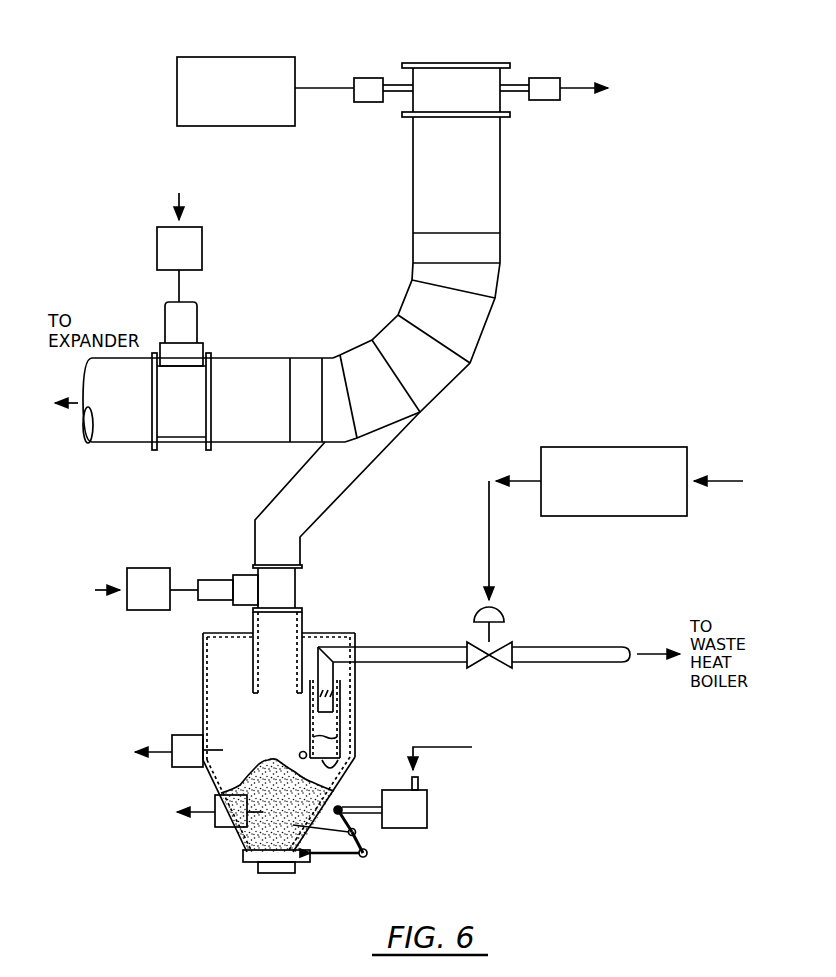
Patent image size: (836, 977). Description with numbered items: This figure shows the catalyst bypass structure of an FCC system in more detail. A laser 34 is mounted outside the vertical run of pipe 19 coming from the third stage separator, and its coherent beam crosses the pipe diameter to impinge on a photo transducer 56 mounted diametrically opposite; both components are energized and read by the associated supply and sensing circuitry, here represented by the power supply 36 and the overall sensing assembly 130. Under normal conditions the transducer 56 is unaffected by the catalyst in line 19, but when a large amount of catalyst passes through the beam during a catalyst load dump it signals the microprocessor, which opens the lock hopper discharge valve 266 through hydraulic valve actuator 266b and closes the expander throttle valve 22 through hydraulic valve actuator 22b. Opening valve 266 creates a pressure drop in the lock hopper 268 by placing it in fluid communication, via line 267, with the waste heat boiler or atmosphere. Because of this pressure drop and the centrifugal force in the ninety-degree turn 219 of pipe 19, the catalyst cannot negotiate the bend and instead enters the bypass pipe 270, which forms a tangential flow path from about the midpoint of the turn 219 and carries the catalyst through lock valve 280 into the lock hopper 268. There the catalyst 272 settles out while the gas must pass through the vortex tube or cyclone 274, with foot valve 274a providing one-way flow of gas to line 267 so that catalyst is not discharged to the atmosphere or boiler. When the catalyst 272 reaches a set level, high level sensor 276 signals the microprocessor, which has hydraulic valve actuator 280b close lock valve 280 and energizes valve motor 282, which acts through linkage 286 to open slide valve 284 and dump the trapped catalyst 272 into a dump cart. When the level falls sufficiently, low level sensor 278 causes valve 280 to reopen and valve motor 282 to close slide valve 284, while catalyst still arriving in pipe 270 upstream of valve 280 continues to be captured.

The power supply 36 is at (243, 53).
The laser 34 is at (370, 73).
The photo transducer 56 is at (547, 75).
The pipe or line 19 is at (503, 173).
The electrostatic precipitator assembly 130 is at (368, 142).
The 90° turn 219 is at (487, 333).
The hydraulic valve actuator 22b is at (205, 250).
The valve 22 is at (198, 318).
The bypass pipe 270 is at (342, 498).
The hydraulic valve actuator 280b is at (148, 568).
The lock valve 280 is at (222, 578).
The catalyst 272 is at (267, 828).
The lock hopper 268 is at (203, 692).
The slide valve 284 is at (287, 873).
The high level sensor 276 is at (172, 740).
The low level sensor 278 is at (215, 800).
The vortex tube or cyclone 274 is at (328, 723).
The foot valve 274a is at (333, 772).
The line 267 is at (553, 663).
The lock hopper discharge valve 266 is at (505, 615).
The hydraulic valve actuator 266b is at (618, 443).
The valve motor 282 is at (427, 803).
The linkage 286 is at (362, 842).